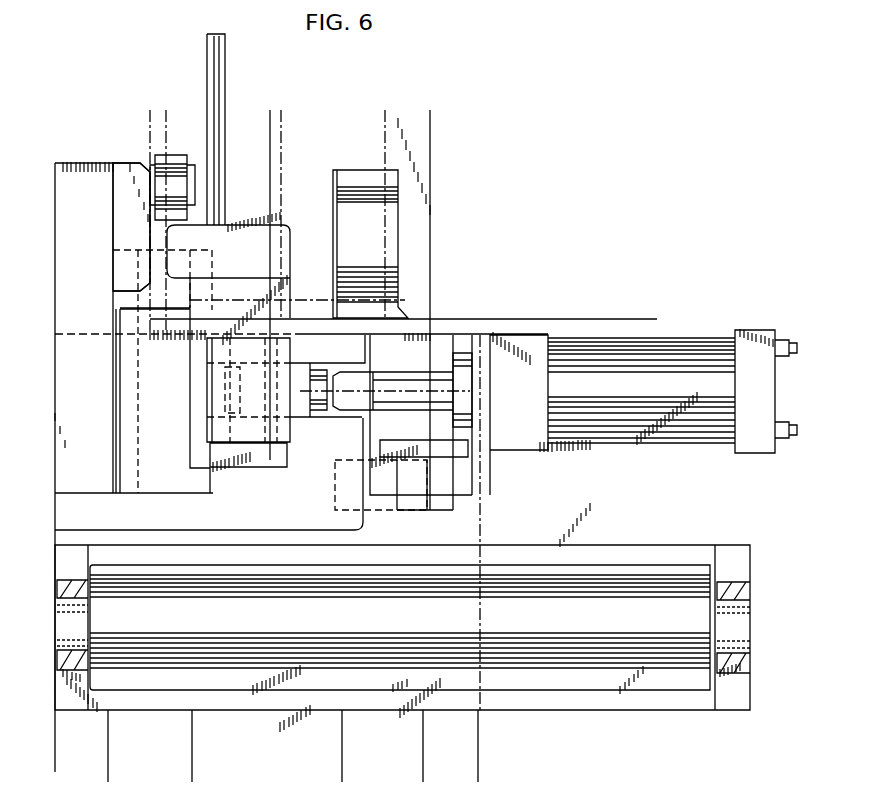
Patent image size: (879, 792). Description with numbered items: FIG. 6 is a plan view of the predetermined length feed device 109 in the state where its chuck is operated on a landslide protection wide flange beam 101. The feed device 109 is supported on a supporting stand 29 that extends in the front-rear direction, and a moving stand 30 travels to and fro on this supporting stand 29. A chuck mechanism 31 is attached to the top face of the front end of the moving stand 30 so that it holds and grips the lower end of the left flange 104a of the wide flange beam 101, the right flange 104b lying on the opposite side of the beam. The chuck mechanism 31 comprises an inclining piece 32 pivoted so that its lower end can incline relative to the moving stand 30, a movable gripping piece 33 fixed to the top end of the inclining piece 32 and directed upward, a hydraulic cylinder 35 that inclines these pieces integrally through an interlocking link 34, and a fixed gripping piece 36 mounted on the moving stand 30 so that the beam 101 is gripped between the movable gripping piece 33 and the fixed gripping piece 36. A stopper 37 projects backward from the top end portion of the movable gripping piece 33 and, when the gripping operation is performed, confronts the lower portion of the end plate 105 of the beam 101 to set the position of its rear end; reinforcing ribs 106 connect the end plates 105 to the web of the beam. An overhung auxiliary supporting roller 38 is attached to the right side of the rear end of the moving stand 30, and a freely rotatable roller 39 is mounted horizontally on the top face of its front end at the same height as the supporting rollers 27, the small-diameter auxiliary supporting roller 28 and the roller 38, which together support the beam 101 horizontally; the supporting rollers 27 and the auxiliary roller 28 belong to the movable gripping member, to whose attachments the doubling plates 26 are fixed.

The doubling plate 26 is at (432, 208).
The overhung supporting roller 27 is at (353, 172).
The small-diameter overhung auxiliary supporting roller 28 is at (335, 484).
The supporting stand 29 is at (57, 735).
The moving stand 30 is at (57, 513).
The chuck mechanism 31 is at (291, 225).
The inclining piece 32 is at (122, 362).
The movable gripping piece 33 is at (242, 228).
The interlocking link 34 is at (287, 415).
The hydraulic cylinder 35 is at (611, 362).
The fixed gripping piece 36 is at (128, 168).
The stopper 37 is at (225, 63).
The overhung auxiliary supporting roller 38 is at (186, 168).
The freely rotatable roller 39 is at (522, 565).
The landslide protection wide flange beam 101 is at (148, 126).
The left flange 104a is at (166, 140).
The right flange 104b is at (379, 123).
The end plate 105 is at (309, 301).
The reinforcing rib 106 is at (280, 136).
The feed device 109 is at (512, 334).